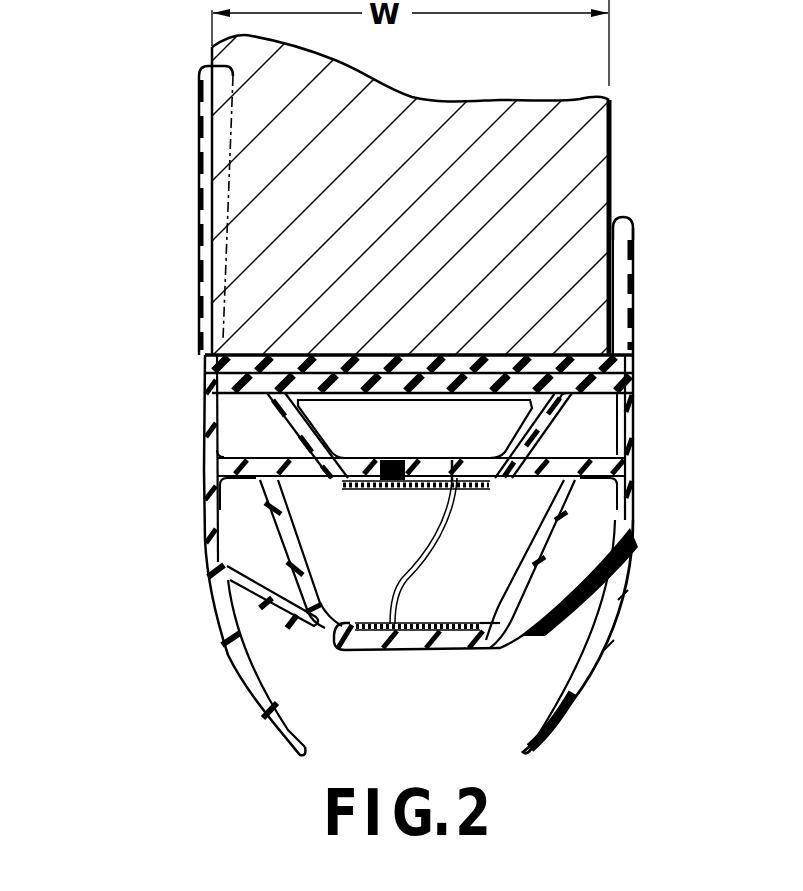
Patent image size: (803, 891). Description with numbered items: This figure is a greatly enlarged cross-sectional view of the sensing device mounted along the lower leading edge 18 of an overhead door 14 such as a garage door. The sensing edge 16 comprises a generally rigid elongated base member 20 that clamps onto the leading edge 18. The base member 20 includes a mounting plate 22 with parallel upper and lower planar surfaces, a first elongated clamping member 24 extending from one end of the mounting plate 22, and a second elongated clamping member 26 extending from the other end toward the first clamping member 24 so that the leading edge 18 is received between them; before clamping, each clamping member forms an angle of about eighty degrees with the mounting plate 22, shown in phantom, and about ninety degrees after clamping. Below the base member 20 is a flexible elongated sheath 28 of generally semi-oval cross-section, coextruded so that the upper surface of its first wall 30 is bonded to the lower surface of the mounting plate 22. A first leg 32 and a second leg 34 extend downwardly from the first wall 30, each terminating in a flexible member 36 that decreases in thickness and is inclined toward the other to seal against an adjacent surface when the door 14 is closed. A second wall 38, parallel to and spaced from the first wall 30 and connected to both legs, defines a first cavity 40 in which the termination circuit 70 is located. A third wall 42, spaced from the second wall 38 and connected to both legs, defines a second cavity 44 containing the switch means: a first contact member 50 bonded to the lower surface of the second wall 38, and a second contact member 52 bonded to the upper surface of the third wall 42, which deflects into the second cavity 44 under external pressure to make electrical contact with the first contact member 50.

The door 14 is at (576, 127).
The sensing edge 16 is at (150, 485).
The leading edge 18 is at (292, 355).
The base member 20 is at (172, 345).
The mounting plate 22 is at (490, 355).
The first elongated clamping member 24 is at (212, 198).
The second elongated clamping member 26 is at (614, 245).
The sheath 28 is at (652, 528).
The first wall 30 is at (518, 392).
The first leg 32 is at (628, 452).
The second leg 34 is at (350, 437).
The flexible members 36 is at (235, 672).
The second wall 38 is at (553, 495).
The first cavity 40 is at (232, 478).
The third wall 42 is at (345, 651).
The second cavity 44 is at (453, 593).
The first contact member 50 is at (385, 492).
The second contact member 52 is at (365, 622).
The termination circuit 70 is at (425, 410).